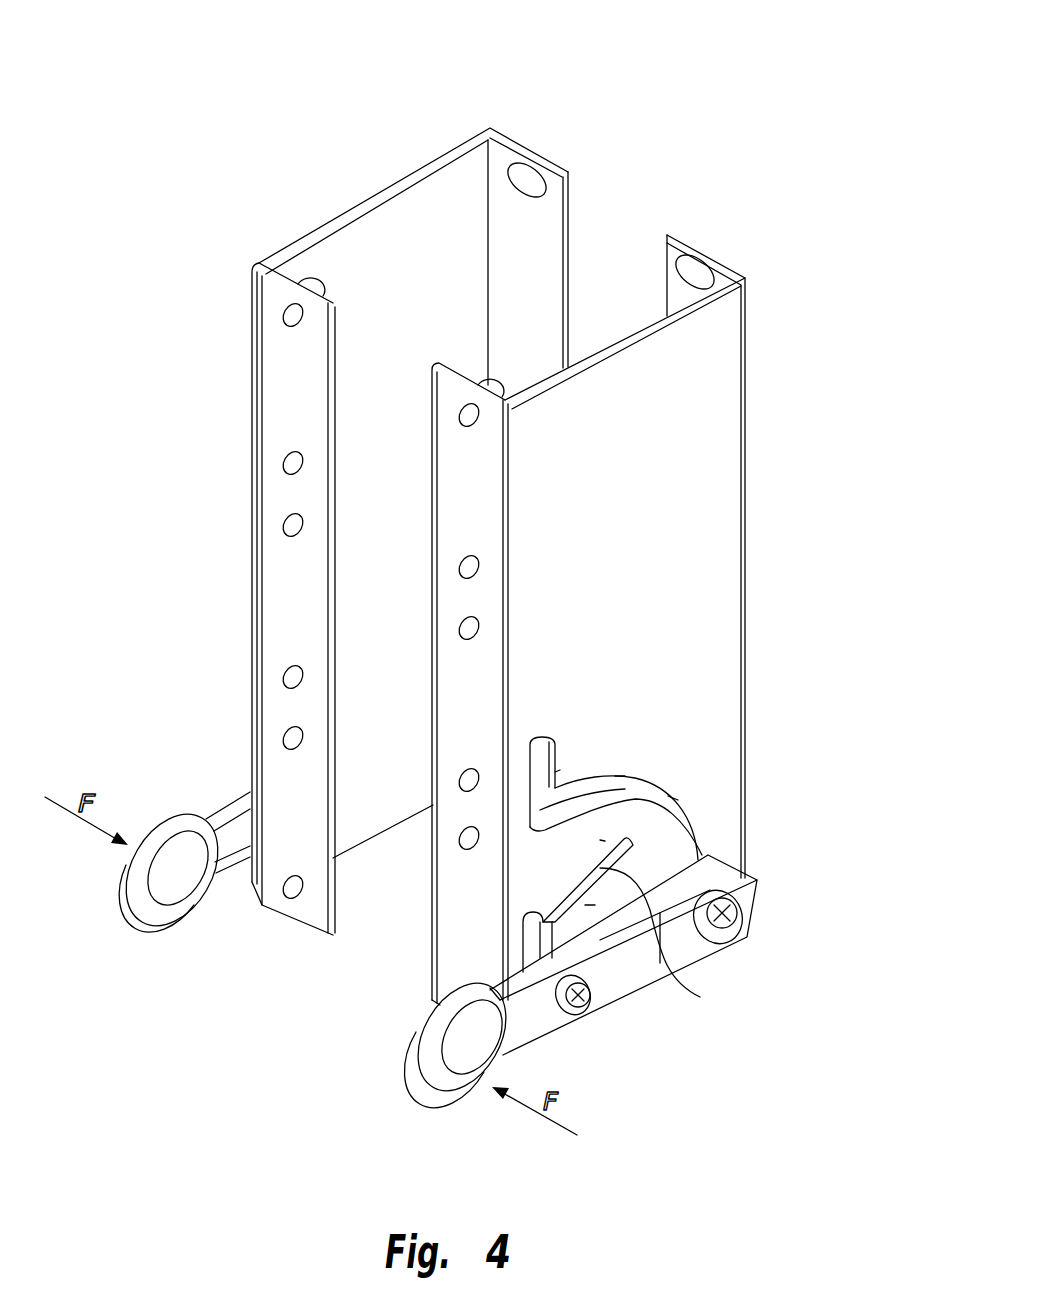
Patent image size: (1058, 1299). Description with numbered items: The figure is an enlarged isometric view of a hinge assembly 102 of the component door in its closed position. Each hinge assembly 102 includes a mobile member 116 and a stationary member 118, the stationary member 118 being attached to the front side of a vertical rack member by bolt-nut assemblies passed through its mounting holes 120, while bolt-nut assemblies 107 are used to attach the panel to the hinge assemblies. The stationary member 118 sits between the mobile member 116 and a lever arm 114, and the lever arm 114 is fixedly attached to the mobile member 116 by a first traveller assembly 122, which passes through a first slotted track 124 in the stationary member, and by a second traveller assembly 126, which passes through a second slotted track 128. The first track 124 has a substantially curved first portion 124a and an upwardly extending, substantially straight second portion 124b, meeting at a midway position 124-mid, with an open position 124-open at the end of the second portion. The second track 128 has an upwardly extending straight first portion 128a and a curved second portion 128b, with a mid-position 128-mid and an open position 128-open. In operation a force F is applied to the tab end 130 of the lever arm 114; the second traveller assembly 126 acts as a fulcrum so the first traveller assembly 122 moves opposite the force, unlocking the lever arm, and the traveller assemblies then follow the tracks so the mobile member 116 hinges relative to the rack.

The hinge assembly 102 is at (362, 128).
The bolt-nut assembly 107 is at (323, 288).
The lever arm 114 is at (216, 812).
The mobile member 116 is at (449, 153).
The stationary member 118 is at (296, 240).
The mounting hole 120 is at (527, 176).
The first traveller assembly 122 is at (730, 913).
The first slotted track 124 is at (648, 782).
The first portion of first track 124a is at (673, 798).
The second portion of first track 124b is at (560, 770).
The open position of first track 124-open is at (565, 748).
The midway position of first track 124-mid is at (620, 773).
The second traveller assembly 126 is at (577, 1016).
The second slotted track 128 is at (600, 868).
The first portion of second track 128a is at (545, 918).
The second portion of second track 128b is at (600, 840).
The open position of second track 128-open is at (700, 997).
The mid-position of second track 128-mid is at (590, 905).
The tab end 130 is at (155, 814).